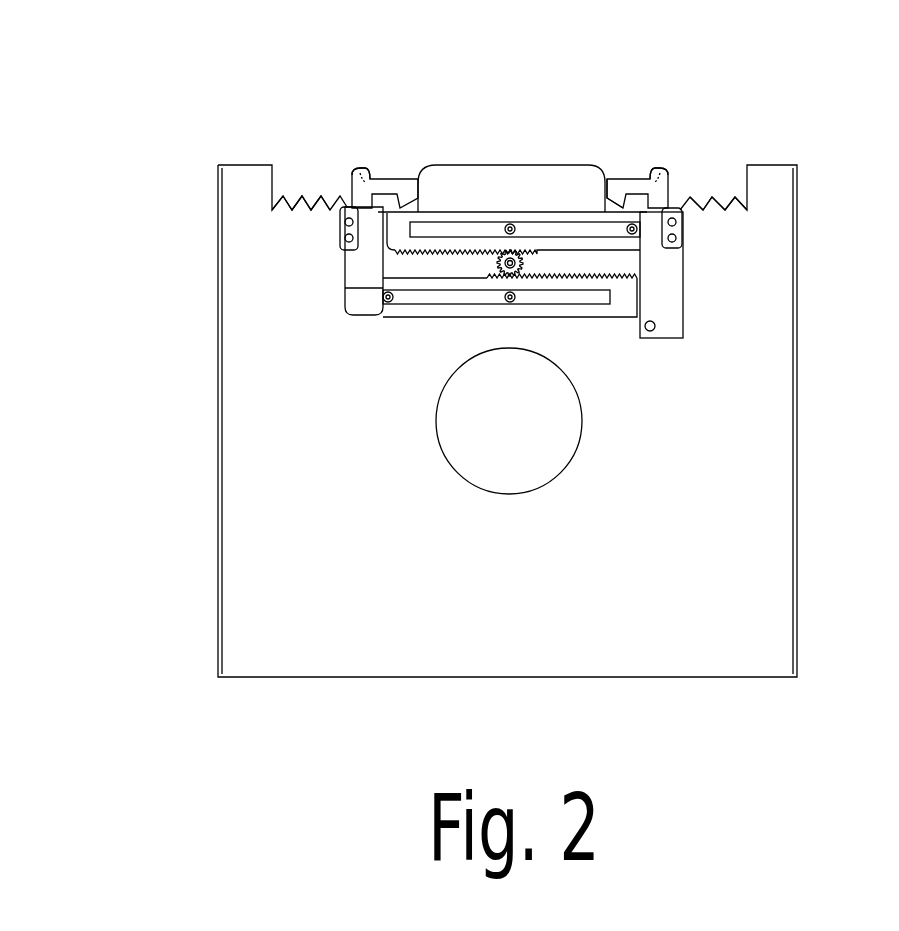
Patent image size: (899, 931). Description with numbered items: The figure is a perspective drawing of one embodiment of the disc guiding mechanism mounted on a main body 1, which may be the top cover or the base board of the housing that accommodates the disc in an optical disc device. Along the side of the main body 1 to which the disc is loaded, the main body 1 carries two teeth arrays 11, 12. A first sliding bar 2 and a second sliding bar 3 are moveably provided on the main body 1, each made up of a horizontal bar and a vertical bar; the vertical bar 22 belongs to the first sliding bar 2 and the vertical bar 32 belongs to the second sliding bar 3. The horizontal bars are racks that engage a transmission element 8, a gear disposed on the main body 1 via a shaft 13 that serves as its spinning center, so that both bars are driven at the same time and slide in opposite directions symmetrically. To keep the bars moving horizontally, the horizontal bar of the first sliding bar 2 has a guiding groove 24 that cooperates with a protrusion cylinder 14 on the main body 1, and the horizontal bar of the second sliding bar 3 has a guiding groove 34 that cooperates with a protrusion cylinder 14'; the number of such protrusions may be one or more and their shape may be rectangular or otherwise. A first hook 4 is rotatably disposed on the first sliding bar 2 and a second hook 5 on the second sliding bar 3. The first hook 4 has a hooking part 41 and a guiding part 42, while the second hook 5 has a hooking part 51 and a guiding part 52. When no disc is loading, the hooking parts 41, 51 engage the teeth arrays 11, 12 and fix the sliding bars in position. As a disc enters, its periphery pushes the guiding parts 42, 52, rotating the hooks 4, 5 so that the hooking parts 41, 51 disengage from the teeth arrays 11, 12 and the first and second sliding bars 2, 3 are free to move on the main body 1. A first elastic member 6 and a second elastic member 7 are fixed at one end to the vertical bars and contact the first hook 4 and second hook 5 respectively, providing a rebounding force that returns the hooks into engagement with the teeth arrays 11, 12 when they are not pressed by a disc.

The main body 1 is at (760, 558).
The teeth array 11 is at (312, 195).
The teeth array 12 is at (682, 205).
The first sliding bar 2 is at (357, 273).
The vertical bar 22 is at (360, 288).
The second sliding bar 3 is at (675, 255).
The vertical bar 32 is at (653, 310).
The first hook 4 is at (400, 180).
The hooking part 41 is at (430, 165).
The guiding part 42 is at (354, 167).
The second hook 5 is at (652, 166).
The hooking part 51 is at (617, 212).
The guiding part 52 is at (679, 167).
The first elastic member 6 is at (342, 207).
The second elastic member 7 is at (675, 205).
The transmission element 8 is at (497, 259).
The shaft 13 is at (522, 258).
The protrusion cylinder 14 is at (391, 331).
The protrusion cylinder 14' is at (523, 163).
The guiding groove 24 is at (430, 297).
The guiding groove 34 is at (460, 232).